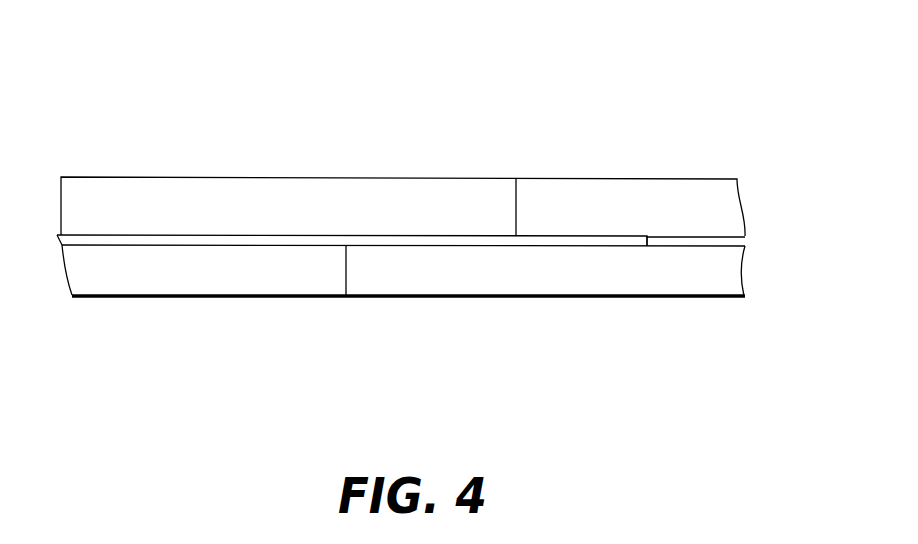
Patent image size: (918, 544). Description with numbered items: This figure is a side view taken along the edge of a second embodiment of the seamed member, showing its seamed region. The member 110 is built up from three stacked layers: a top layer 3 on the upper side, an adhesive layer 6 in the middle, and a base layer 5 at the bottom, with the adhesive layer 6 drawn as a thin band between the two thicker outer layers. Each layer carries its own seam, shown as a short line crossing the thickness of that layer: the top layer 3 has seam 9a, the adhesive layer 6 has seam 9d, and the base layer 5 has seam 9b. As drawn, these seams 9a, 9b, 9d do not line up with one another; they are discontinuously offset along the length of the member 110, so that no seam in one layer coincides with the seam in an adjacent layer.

The member 110 is at (133, 77).
The top layer 3 is at (675, 198).
The adhesive layer 6 is at (733, 242).
The base layer 5 is at (670, 282).
The seam 9a is at (516, 206).
The seam 9b is at (346, 279).
The seam 9d is at (647, 246).